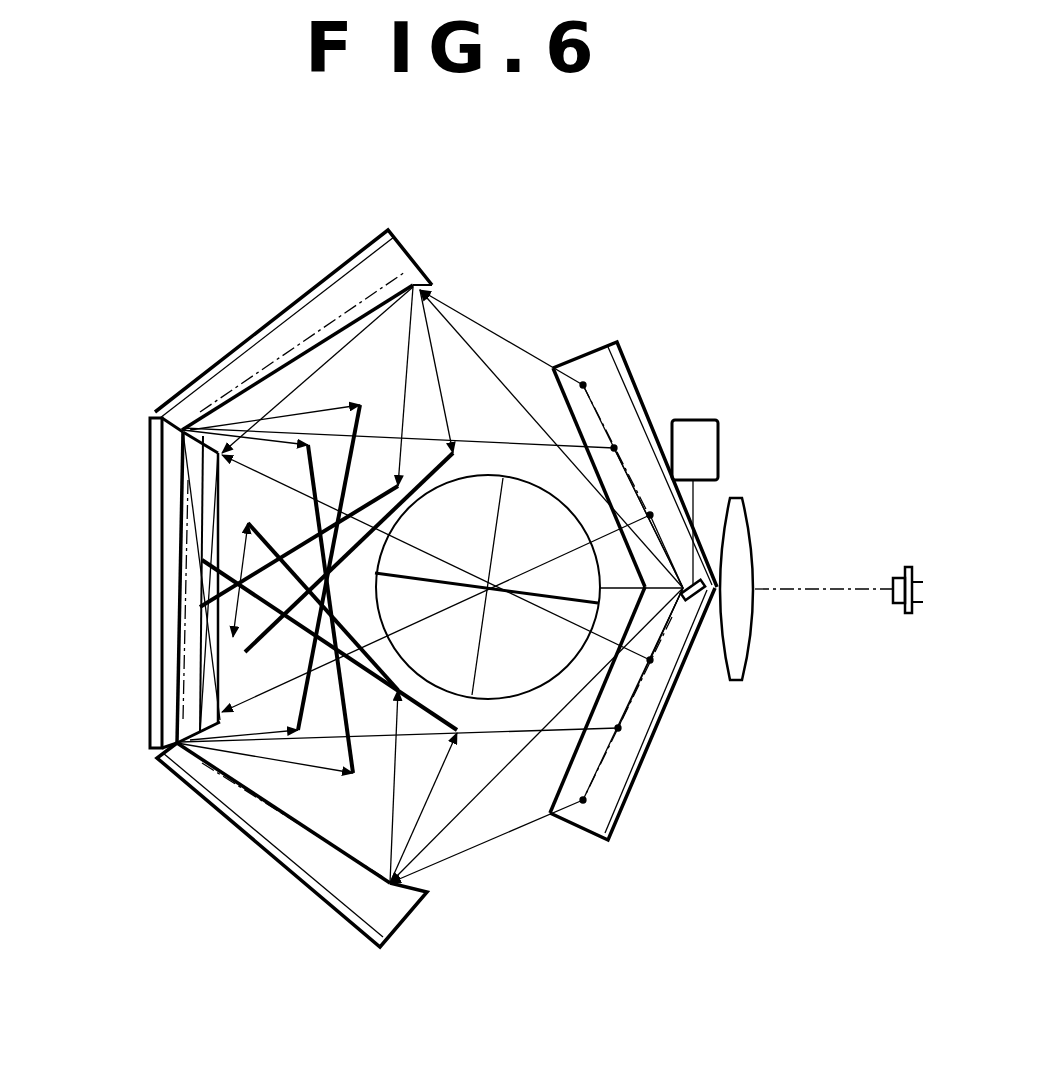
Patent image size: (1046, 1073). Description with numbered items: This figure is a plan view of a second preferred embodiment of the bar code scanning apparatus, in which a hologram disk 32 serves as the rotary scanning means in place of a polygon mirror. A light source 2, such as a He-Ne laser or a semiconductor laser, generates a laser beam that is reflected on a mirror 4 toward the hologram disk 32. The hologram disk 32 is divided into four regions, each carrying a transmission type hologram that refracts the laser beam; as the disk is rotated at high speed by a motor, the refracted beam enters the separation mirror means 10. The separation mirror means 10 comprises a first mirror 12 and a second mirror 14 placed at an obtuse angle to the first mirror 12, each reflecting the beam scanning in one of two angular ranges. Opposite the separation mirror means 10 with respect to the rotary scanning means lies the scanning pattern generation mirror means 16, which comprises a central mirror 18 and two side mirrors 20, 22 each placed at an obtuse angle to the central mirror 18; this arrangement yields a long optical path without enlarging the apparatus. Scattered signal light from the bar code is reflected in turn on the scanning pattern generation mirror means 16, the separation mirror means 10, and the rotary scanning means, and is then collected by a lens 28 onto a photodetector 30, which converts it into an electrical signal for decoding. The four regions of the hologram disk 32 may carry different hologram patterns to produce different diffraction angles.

The light source 2 is at (712, 420).
The mirror 4 is at (698, 604).
The separation mirror means 10 is at (652, 406).
The first mirror 12 is at (636, 372).
The second mirror 14 is at (636, 806).
The scanning pattern generation mirror means 16 is at (180, 384).
The central mirror 18 is at (150, 575).
The side mirror 20 is at (250, 333).
The side mirror 22 is at (210, 800).
The lens 28 is at (752, 530).
The photodetector 30 is at (900, 605).
The hologram disk 32 is at (494, 476).